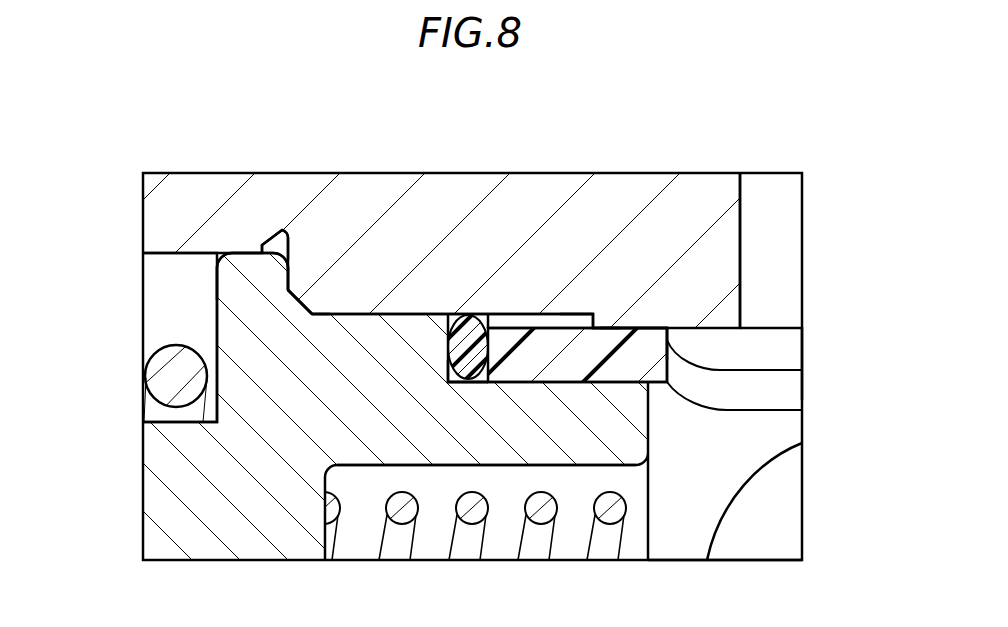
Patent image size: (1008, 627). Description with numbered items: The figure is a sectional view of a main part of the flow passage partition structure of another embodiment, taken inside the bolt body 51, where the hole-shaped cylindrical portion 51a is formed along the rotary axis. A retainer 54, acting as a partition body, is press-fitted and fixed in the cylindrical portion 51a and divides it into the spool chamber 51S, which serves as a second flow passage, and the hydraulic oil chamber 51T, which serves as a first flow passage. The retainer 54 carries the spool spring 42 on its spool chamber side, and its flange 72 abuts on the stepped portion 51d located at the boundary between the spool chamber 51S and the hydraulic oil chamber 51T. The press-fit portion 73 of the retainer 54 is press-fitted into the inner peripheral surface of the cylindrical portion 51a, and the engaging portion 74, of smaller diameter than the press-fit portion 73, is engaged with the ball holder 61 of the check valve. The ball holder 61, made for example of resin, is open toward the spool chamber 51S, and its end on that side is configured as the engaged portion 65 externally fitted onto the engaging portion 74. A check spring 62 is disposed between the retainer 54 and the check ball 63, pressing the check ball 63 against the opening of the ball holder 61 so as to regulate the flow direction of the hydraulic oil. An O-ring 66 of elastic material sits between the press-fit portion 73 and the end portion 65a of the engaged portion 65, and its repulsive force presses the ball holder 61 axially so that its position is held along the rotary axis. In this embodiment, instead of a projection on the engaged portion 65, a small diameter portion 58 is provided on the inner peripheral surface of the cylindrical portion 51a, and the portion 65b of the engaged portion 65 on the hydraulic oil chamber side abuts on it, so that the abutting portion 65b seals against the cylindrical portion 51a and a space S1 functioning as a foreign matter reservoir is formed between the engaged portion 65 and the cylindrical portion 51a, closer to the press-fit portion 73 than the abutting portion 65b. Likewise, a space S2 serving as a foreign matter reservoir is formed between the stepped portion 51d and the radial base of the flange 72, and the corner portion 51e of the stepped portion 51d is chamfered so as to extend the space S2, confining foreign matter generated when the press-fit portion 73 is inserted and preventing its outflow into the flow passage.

The spool spring 42 is at (160, 358).
The bolt body 51 is at (430, 338).
The cylindrical portion 51a is at (707, 180).
The stepped portion 51d is at (259, 221).
The corner portion 51e is at (305, 310).
The spool chamber 51S is at (150, 272).
The hydraulic oil chamber 51T is at (735, 357).
The retainer 54 is at (150, 484).
The small diameter portion 58 is at (717, 330).
The ball holder 61 is at (577, 246).
The check spring 62 is at (683, 530).
The check ball 63 is at (793, 511).
The engaged portion 65 is at (510, 337).
The end portion 65a is at (484, 349).
The abutting portion 65b is at (647, 328).
The O-ring 66 is at (462, 318).
The flange 72 is at (228, 275).
The press-fit portion 73 is at (350, 300).
The engaging portion 74 is at (495, 453).
The space S1 is at (572, 318).
The space S2 is at (290, 308).